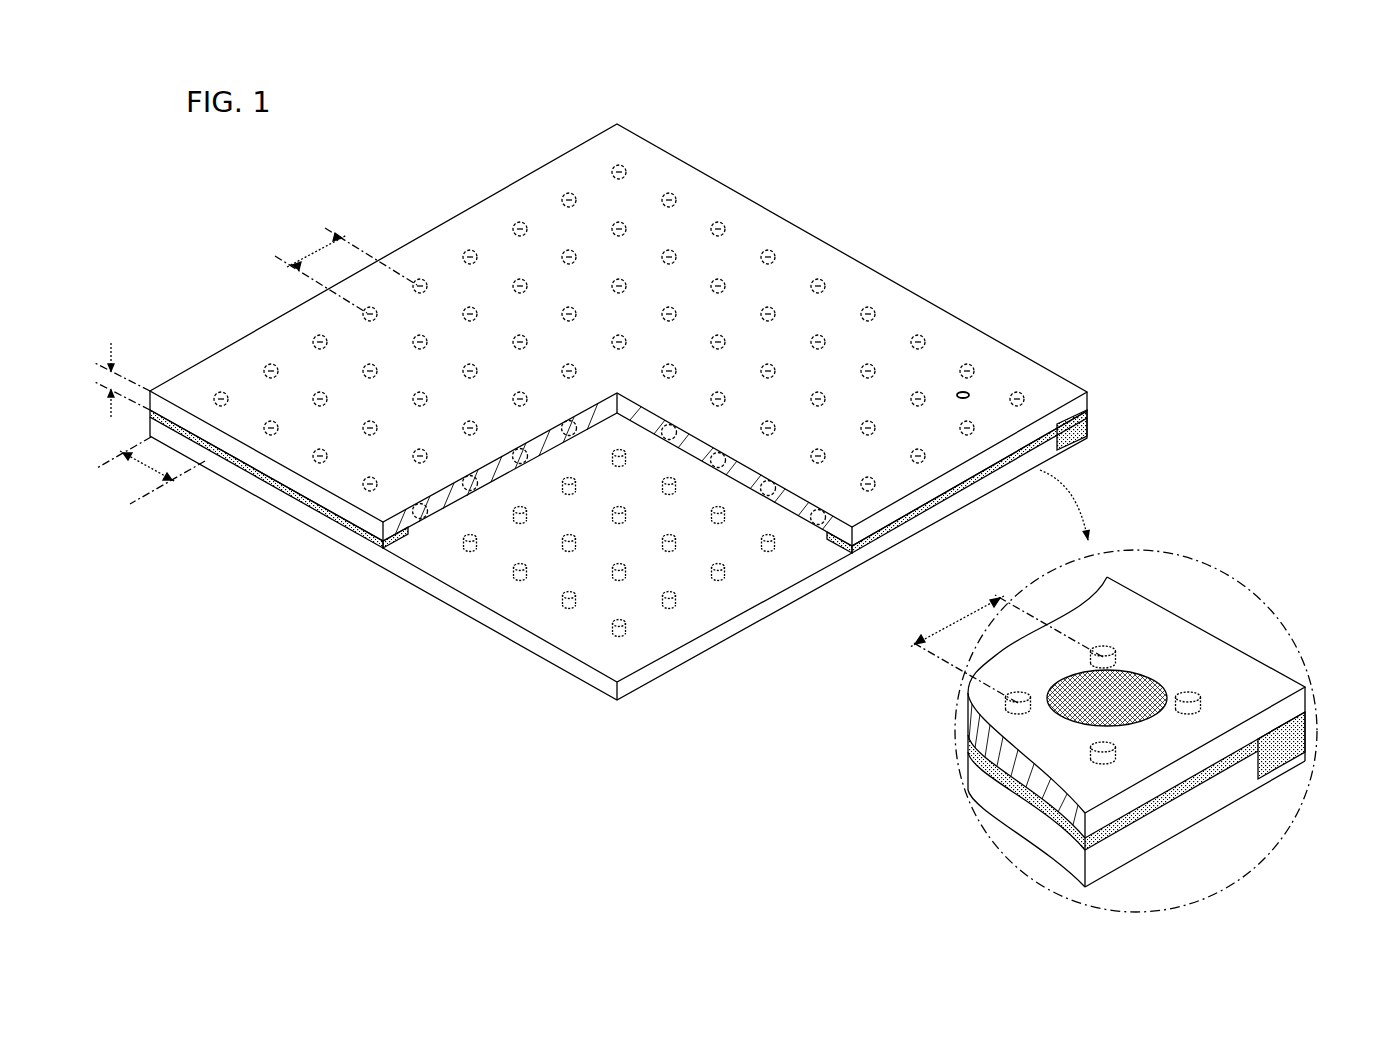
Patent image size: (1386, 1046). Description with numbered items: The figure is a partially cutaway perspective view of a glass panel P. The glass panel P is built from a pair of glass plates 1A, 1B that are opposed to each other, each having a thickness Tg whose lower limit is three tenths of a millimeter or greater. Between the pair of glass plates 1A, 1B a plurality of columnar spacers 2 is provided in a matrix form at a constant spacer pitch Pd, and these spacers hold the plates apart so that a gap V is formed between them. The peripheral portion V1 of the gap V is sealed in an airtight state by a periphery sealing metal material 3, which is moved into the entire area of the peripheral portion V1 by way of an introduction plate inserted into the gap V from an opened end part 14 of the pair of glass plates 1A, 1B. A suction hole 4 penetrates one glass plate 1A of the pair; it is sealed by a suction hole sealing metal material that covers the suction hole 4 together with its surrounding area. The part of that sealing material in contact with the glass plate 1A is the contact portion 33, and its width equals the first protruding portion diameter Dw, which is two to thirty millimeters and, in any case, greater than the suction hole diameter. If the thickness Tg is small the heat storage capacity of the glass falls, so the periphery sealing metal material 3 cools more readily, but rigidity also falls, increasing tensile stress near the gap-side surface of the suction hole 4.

The glass panel P is at (928, 186).
The glass plate 1A is at (902, 316).
The glass plate 1B is at (496, 630).
The columnar spacers 2 is at (774, 257).
The periphery sealing metal material 3 is at (332, 526).
The suction hole 4 is at (968, 390).
The opened end part 14 is at (1097, 414).
The contact portion 33 is at (1130, 723).
The gap V is at (442, 525).
The peripheral portion V1 is at (952, 524).
The thickness Tg is at (108, 376).
The spacer pitch Pd is at (257, 363).
The first protruding portion diameter Dw is at (1006, 647).